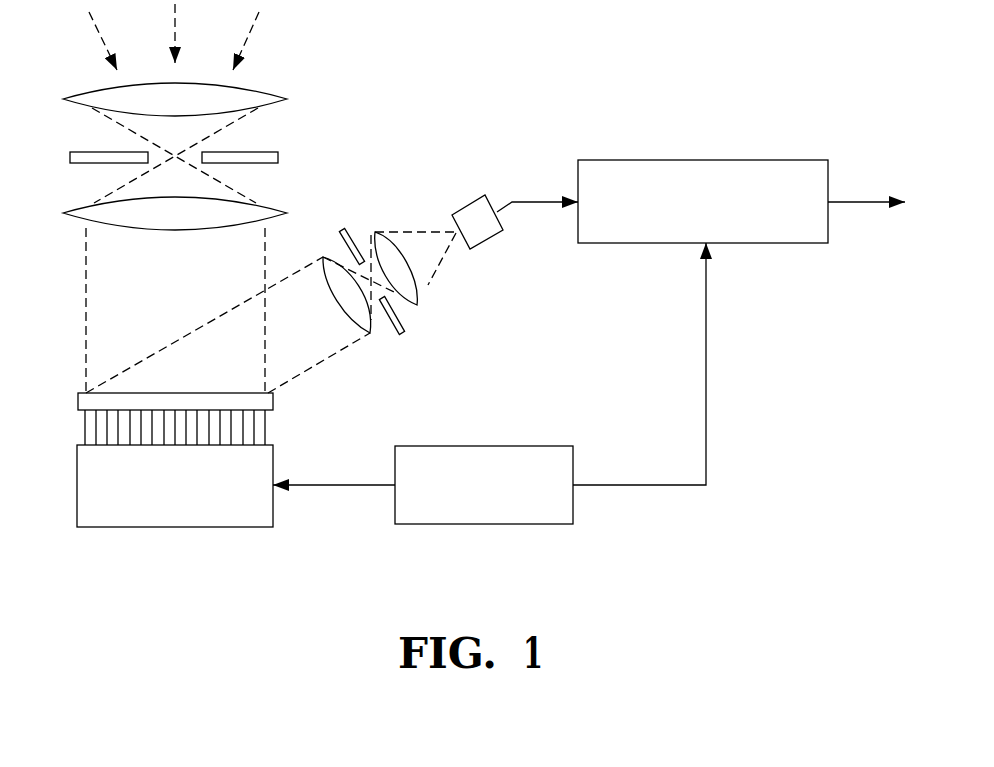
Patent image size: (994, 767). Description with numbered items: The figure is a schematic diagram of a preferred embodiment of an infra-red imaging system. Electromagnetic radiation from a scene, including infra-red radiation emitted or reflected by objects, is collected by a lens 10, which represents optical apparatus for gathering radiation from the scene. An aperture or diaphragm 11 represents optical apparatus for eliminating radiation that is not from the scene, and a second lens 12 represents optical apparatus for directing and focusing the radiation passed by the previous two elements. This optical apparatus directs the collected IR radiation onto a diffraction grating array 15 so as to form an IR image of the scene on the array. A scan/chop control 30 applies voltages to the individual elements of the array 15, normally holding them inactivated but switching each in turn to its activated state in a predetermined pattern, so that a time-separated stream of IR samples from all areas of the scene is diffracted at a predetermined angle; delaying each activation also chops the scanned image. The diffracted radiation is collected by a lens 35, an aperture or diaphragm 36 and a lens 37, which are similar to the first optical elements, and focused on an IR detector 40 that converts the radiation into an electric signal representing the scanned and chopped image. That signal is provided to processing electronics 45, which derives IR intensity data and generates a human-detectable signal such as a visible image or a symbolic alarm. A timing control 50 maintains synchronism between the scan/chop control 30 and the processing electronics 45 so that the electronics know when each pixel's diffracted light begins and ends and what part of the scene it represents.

The lens 10 is at (262, 92).
The aperture 11 is at (267, 152).
The lens 12 is at (273, 208).
The diffraction grating array 15 is at (66, 393).
The scan/chop control 30 is at (170, 527).
The lens 35 is at (368, 332).
The aperture 36 is at (404, 323).
The lens 37 is at (418, 297).
The infra-red detector 40 is at (466, 204).
The processing electronics 45 is at (707, 160).
The timing control 50 is at (525, 446).